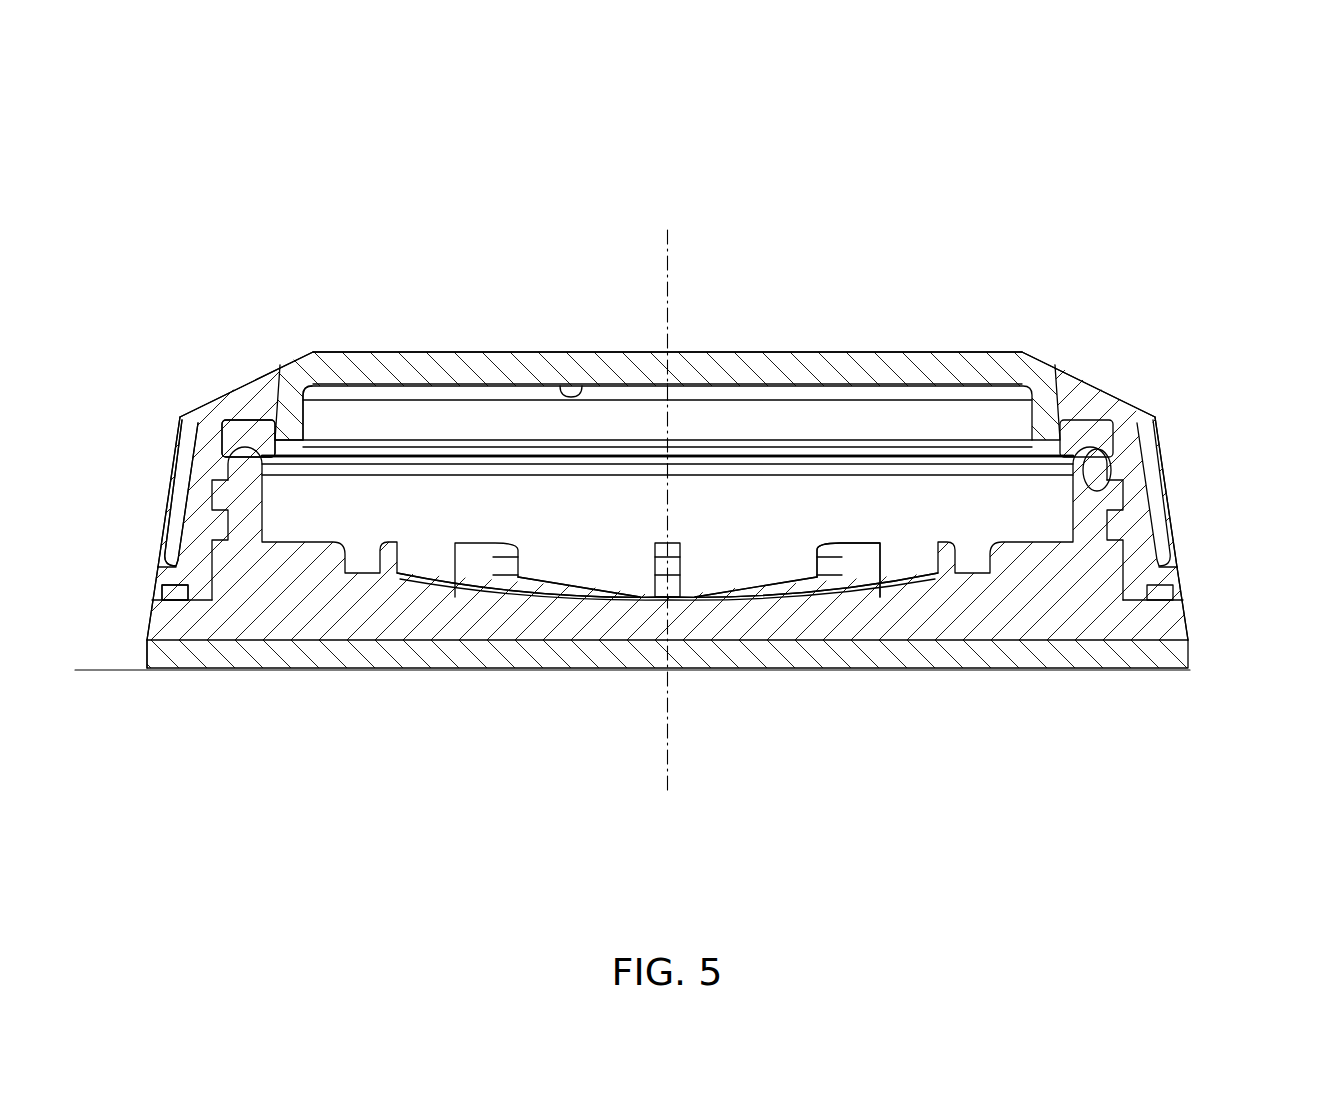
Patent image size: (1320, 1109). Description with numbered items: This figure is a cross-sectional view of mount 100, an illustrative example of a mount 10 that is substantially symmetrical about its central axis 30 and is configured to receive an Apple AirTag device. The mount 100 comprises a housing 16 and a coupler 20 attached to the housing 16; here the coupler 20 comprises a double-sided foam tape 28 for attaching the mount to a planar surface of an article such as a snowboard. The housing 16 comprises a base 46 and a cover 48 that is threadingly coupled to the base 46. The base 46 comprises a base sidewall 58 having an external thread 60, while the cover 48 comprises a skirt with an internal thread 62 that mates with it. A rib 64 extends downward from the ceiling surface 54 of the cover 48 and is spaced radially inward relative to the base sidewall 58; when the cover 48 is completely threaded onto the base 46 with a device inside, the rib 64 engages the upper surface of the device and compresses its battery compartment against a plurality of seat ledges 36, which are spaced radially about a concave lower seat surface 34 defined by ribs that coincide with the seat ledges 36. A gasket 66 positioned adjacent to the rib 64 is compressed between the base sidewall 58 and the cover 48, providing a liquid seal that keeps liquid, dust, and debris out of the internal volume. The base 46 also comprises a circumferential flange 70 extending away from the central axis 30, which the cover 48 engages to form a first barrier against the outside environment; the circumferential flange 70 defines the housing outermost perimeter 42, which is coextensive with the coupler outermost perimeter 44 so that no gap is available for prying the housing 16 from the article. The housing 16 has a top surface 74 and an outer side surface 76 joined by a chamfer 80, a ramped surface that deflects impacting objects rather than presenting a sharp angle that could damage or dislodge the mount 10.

The mount 10 is at (1207, 122).
The mount 100 is at (1088, 170).
The housing 16 is at (1190, 507).
The coupler 20 is at (250, 674).
The double-sided foam tape 28 is at (348, 663).
The central axis 30 is at (670, 268).
The concave lower seat surface 34 is at (562, 580).
The seat ledges 36 is at (305, 540).
The housing outermost perimeter 42 is at (148, 623).
The coupler outermost perimeter 44 is at (140, 657).
The base 46 is at (1192, 620).
The cover 48 is at (1078, 373).
The ceiling surface 54 is at (563, 578).
The base sidewall 58 is at (267, 483).
The external thread 60 is at (180, 417).
The internal thread 62 is at (1088, 452).
The rib 64 is at (303, 395).
The gasket 66 is at (223, 418).
The circumferential flange 70 is at (176, 588).
The top surface 74 is at (888, 352).
The outer side surface 76 is at (160, 477).
The chamfer 80 is at (245, 378).